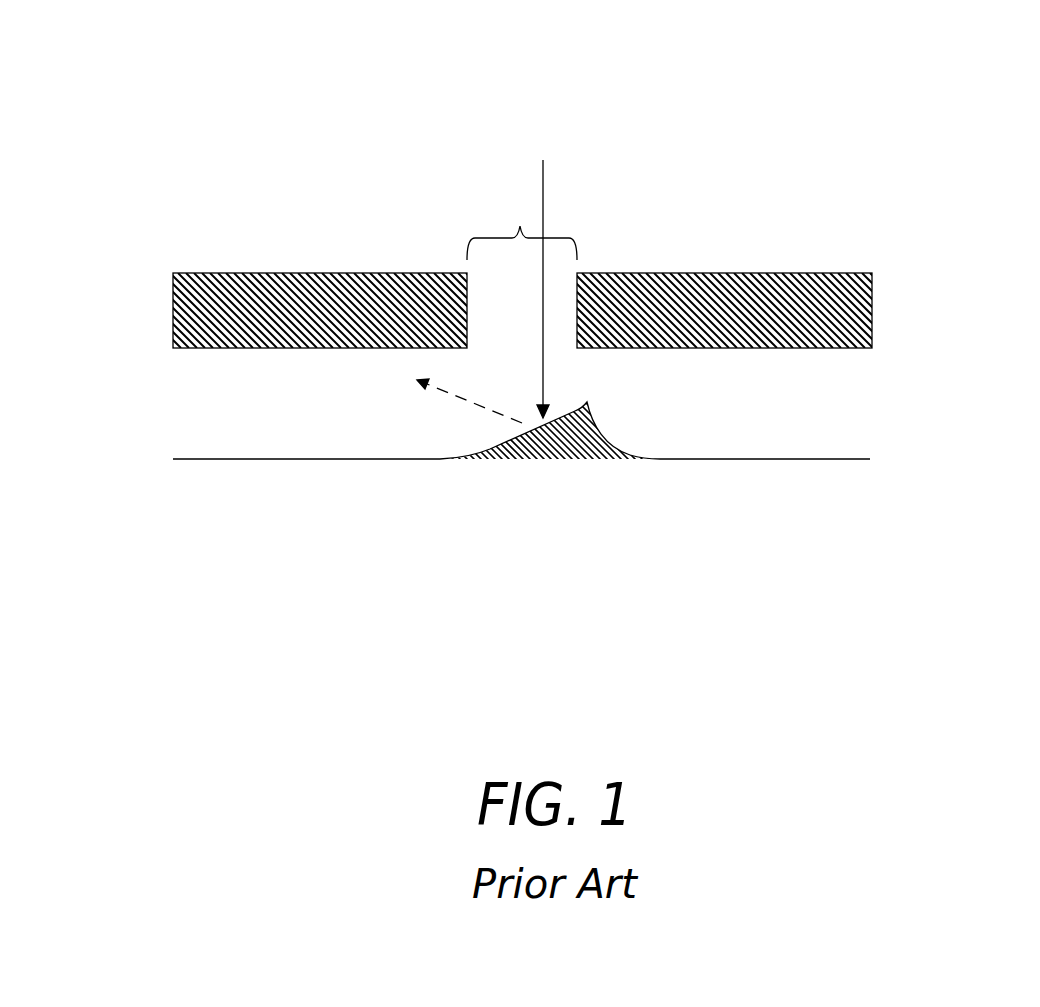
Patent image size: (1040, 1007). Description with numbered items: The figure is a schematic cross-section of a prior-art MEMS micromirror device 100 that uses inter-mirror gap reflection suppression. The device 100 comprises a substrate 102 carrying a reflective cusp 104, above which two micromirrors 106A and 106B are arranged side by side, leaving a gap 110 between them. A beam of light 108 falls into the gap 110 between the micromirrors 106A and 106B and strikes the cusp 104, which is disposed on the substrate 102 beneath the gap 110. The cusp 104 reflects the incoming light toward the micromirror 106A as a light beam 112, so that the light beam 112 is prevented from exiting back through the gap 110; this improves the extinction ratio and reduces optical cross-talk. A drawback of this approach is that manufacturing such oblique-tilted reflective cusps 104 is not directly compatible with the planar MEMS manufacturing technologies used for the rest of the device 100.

The MEMS micromirror device 100 is at (860, 87).
The substrate 102 is at (818, 459).
The cusp 104 is at (563, 460).
The micromirror 106A is at (173, 332).
The micromirror 106B is at (857, 331).
The beam of light 108 is at (543, 192).
The gap 110 is at (520, 226).
The light beam 112 is at (460, 397).